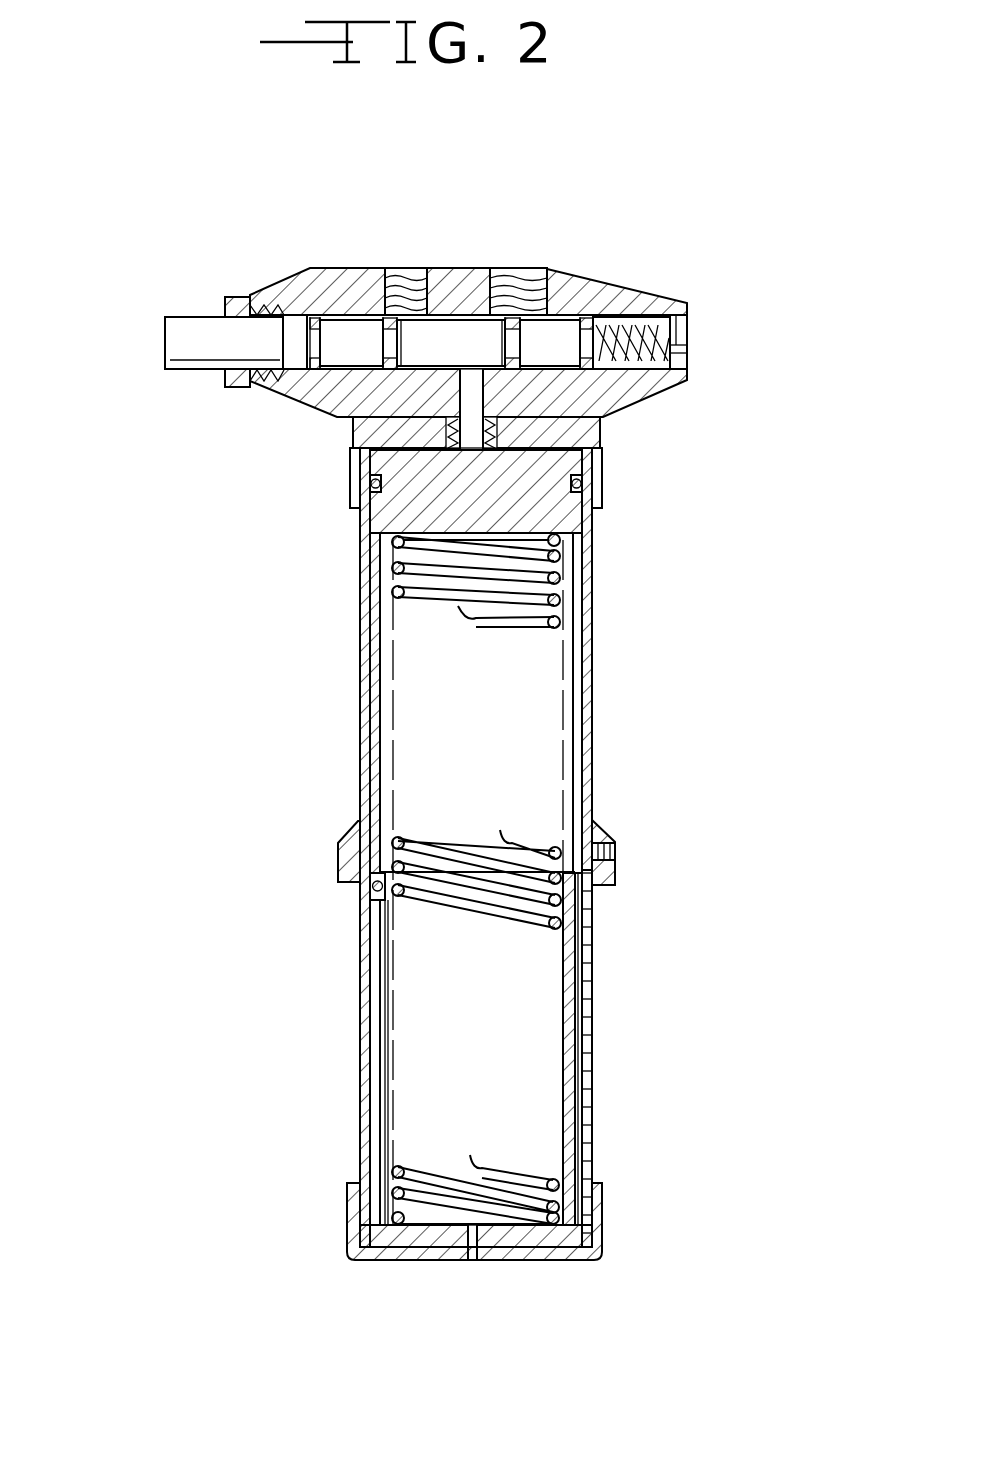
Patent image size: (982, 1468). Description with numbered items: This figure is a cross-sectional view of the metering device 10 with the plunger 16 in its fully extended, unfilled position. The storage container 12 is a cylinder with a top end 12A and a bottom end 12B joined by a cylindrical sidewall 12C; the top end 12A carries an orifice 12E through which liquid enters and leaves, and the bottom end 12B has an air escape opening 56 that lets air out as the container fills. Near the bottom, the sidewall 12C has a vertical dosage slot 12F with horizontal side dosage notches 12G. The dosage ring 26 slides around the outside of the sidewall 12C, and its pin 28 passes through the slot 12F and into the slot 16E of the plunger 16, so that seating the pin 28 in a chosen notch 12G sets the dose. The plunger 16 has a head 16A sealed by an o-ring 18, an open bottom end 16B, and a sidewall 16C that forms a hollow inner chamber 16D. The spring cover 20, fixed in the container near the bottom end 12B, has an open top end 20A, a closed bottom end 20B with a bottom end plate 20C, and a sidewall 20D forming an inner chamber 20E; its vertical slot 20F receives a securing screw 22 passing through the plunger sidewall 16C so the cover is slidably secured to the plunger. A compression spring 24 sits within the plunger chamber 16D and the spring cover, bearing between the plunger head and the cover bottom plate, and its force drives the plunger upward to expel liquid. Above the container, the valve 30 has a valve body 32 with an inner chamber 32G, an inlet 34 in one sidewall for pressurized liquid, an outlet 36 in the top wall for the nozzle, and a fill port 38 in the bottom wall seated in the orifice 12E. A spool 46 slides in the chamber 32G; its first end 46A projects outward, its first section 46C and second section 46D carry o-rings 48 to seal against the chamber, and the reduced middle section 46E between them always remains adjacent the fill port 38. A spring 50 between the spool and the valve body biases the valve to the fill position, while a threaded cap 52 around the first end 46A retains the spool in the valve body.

The metering device 10 is at (665, 523).
The storage container 12 is at (592, 614).
The top end 12A is at (602, 460).
The bottom end 12B is at (602, 1210).
The cylindrical sidewall 12C is at (608, 562).
The orifice 12E is at (500, 430).
The dosage slot 12F is at (590, 965).
The dosage notches 12G is at (590, 1015).
The plunger 16 is at (383, 514).
The head 16A is at (378, 480).
The bottom end 16B is at (348, 850).
The sidewall 16C is at (372, 688).
The inner chamber 16D is at (420, 639).
The slot 16E is at (582, 678).
The o-ring 18 is at (380, 490).
The spring cover 20 is at (383, 974).
The open top end 20A is at (378, 885).
The closed bottom end 20B is at (380, 1218).
The bottom end plate 20C is at (372, 1260).
The sidewall 20D is at (572, 1118).
The inner chamber 20E is at (548, 1044).
The vertical slot 20F is at (386, 1036).
The securing screw 22 is at (378, 900).
The spring 24 is at (398, 1188).
The dosage ring 26 is at (616, 882).
The pin 28 is at (602, 834).
The valve 30 is at (718, 333).
The valve body 32 is at (385, 270).
The inner chamber 32G is at (420, 373).
The inlet 34 is at (440, 330).
The outlet 36 is at (520, 300).
The fill port 38 is at (486, 382).
The spool 46 is at (250, 300).
The first end 46A is at (165, 362).
The first section 46C is at (345, 295).
The second section 46D is at (550, 336).
The middle section 46E is at (468, 277).
The o-rings 48 is at (642, 338).
The spring 50 is at (681, 332).
The threaded cap 52 is at (228, 300).
The air escape opening 56 is at (480, 1262).